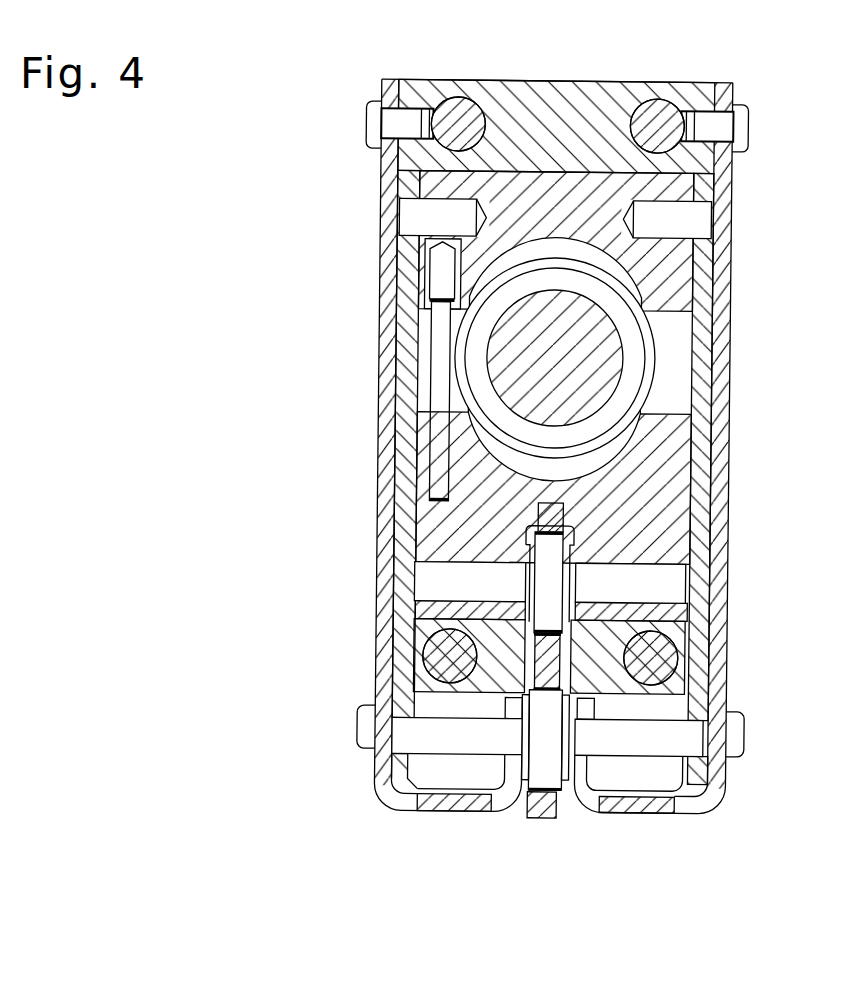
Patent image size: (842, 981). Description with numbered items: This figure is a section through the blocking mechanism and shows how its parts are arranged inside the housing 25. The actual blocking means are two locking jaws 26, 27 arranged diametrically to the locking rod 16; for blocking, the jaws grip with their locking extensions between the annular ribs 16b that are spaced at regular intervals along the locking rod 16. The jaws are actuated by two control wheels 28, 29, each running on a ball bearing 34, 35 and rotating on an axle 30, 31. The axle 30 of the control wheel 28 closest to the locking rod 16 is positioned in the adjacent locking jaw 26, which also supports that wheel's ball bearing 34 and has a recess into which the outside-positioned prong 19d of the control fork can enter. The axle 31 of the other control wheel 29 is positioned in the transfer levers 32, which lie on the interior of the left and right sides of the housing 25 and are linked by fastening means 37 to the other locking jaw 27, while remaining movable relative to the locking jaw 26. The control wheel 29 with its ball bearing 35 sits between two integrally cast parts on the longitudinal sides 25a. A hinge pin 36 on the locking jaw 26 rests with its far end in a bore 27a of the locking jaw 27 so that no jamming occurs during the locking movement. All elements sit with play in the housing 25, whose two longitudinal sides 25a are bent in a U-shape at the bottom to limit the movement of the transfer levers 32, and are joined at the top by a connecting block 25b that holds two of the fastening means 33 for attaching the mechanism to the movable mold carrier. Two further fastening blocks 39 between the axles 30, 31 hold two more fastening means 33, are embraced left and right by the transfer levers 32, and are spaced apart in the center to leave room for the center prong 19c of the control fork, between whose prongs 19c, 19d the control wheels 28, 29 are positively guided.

The locking rod 16 is at (596, 386).
The annular ribs 16b is at (628, 357).
The center prong 19c is at (548, 655).
The flanking prong 19d is at (556, 505).
The housing 25 is at (392, 278).
The longitudinal sides 25a is at (732, 405).
The connecting block 25b is at (553, 112).
The locking jaw 26 is at (662, 450).
The locking jaw 27 is at (680, 283).
The bore 27a is at (437, 278).
The control wheel 28 is at (547, 583).
The control wheel 29 is at (550, 765).
The axle 30 is at (655, 588).
The axle 31 is at (700, 782).
The transfer levers 32 is at (400, 348).
The fastening means 33 is at (458, 120).
The ball bearing 34 is at (665, 630).
The ball bearing 35 is at (573, 765).
The hinge pin 36 is at (440, 456).
The fastening means 37 is at (412, 212).
The fastening blocks 39 is at (418, 722).